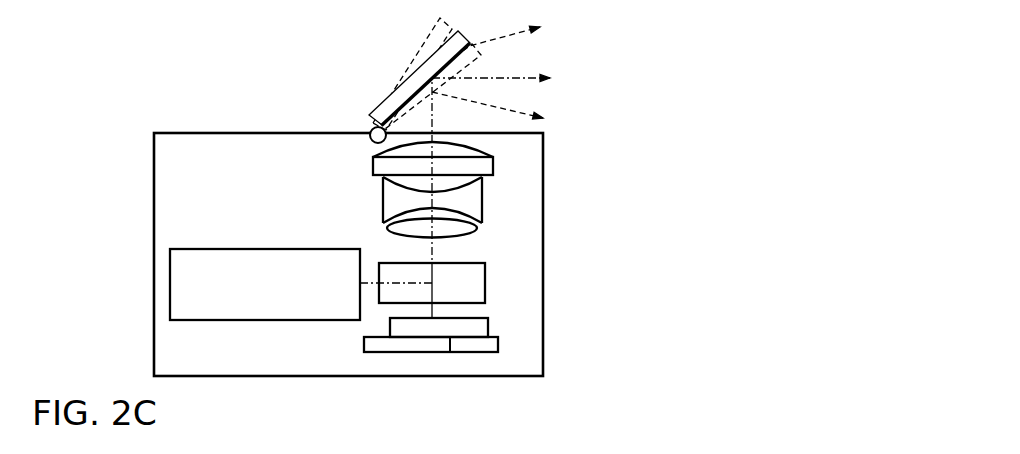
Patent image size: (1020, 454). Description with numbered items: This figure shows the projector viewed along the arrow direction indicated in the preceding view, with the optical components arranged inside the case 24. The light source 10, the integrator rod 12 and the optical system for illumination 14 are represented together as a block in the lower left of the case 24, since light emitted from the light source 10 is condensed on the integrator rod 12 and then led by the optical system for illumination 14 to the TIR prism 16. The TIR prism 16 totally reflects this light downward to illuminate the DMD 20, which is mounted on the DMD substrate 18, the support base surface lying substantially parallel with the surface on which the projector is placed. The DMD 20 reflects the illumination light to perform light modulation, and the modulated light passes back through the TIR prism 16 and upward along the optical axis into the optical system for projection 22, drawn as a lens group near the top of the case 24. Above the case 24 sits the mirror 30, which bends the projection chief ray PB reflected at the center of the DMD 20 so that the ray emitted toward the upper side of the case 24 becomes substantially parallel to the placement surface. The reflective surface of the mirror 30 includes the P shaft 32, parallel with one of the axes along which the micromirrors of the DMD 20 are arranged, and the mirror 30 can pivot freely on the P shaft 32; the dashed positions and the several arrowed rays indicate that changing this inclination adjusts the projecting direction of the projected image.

The light source 10 is at (261, 196).
The integrator rod 12 is at (261, 196).
The optical system for illumination 14 is at (267, 248).
The TIR prism 16 is at (487, 285).
The DMD substrate 18 is at (499, 344).
The DMD 20 is at (489, 328).
The optical system for projection 22 is at (505, 150).
The case 24 is at (545, 225).
The mirror 30 is at (385, 92).
The P shaft 32 is at (372, 129).
The projection chief ray PB is at (455, 132).